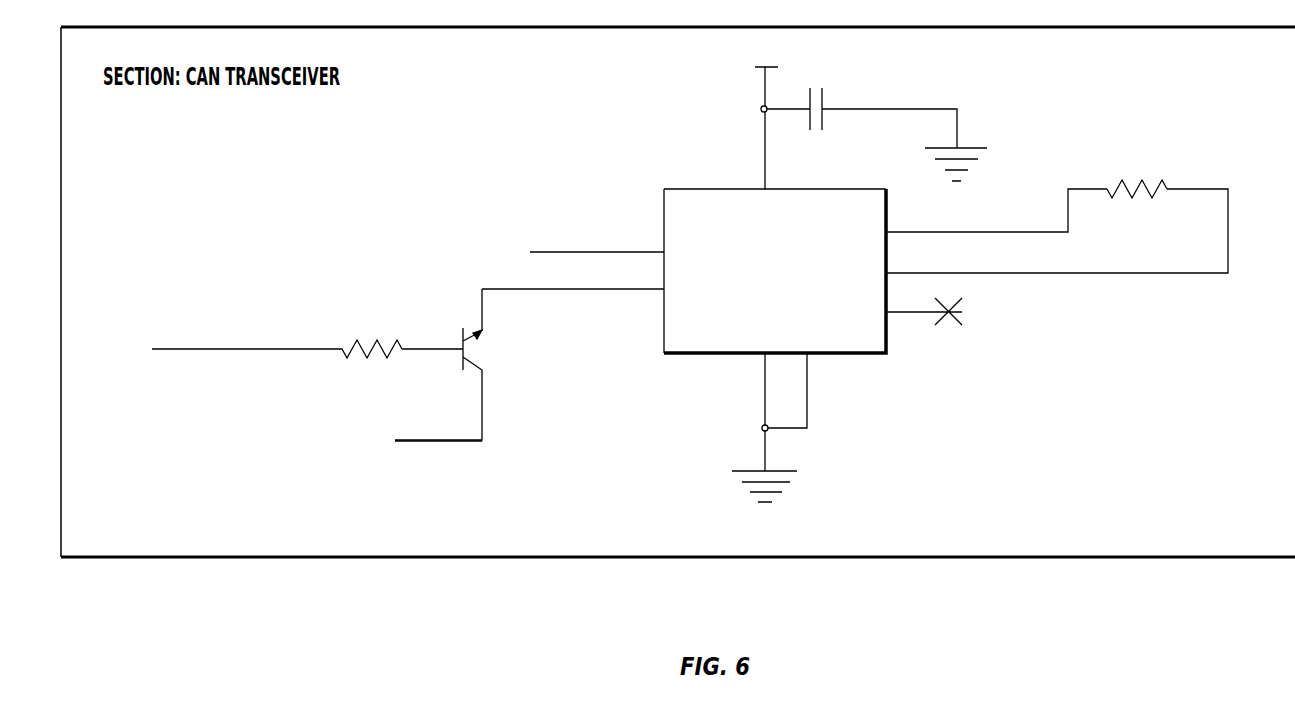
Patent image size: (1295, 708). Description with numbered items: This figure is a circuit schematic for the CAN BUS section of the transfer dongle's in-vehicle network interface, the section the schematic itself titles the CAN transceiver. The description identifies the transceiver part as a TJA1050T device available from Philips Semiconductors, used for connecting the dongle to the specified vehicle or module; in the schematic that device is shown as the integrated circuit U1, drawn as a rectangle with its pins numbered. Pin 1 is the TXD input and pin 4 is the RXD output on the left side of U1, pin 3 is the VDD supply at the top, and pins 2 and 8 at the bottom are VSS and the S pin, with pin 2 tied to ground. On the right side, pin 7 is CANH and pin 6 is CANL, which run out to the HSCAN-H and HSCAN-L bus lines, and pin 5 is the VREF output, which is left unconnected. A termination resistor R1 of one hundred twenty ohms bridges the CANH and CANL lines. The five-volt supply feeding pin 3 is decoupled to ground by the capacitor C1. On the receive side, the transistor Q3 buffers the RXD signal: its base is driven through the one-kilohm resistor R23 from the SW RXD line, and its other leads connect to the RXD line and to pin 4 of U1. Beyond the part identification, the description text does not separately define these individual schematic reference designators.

The CAN transceiver TJA1050T U1 is at (693, 266).
The 0.1 uF decoupling capacitor C1 is at (877, 136).
The 120 ohm termination resistor R1 is at (1137, 193).
The 1K base resistor R23 is at (277, 351).
The MMBT2222AL transistor Q3 is at (438, 355).
The TXD pin 1 is at (597, 235).
The VSS pin 2 is at (761, 446).
The VDD pin 3 is at (756, 114).
The RXD pin 4 is at (573, 274).
The VREF pin 5 is at (939, 335).
The CANL pin 6 is at (1057, 231).
The CANH pin 7 is at (996, 211).
The S pin 8 is at (787, 390).